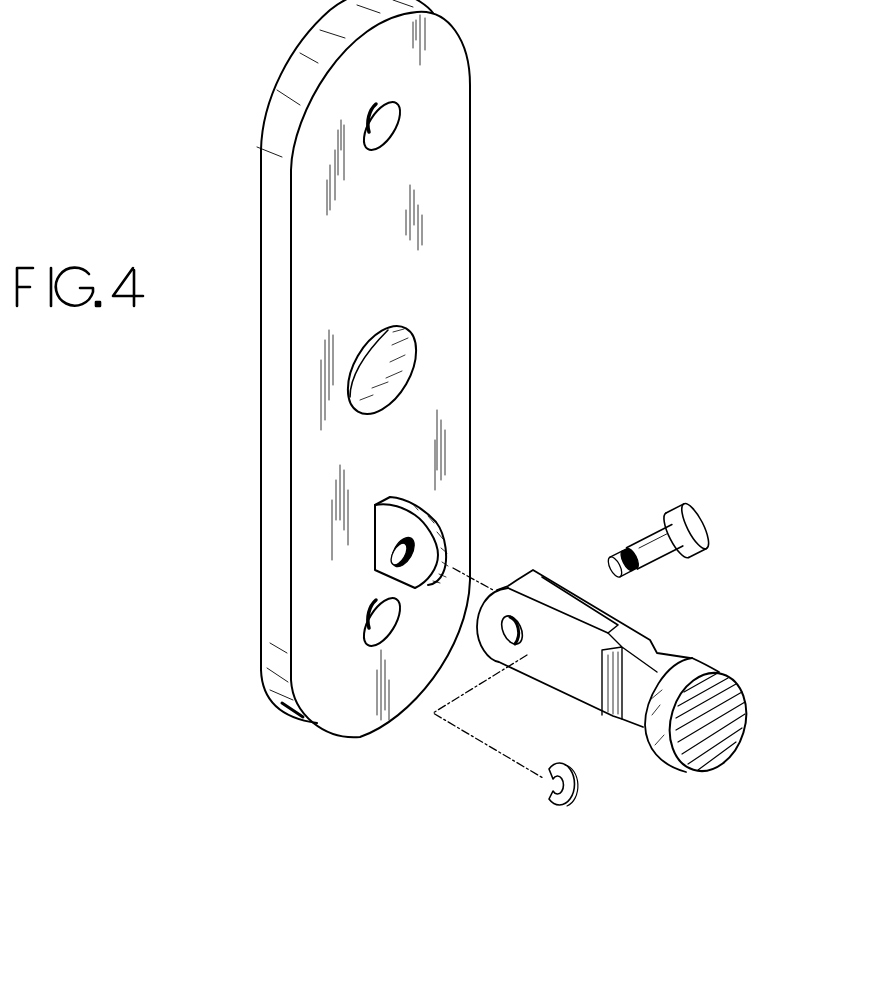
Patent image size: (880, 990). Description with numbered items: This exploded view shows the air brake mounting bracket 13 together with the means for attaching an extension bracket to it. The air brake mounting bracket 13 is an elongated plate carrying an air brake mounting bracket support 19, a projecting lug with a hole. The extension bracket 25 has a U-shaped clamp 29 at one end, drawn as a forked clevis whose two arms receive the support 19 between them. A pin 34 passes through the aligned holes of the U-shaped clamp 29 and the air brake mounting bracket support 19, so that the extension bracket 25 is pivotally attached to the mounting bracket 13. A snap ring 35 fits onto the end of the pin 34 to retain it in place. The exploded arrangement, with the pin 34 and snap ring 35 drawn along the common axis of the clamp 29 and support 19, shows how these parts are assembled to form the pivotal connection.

The air brake mounting bracket 13 is at (470, 168).
The air brake mounting bracket support 19 is at (444, 532).
The U-shaped clamp 29 is at (553, 566).
The extension bracket 25 is at (728, 676).
The pin 34 is at (695, 547).
The snap ring 35 is at (575, 783).